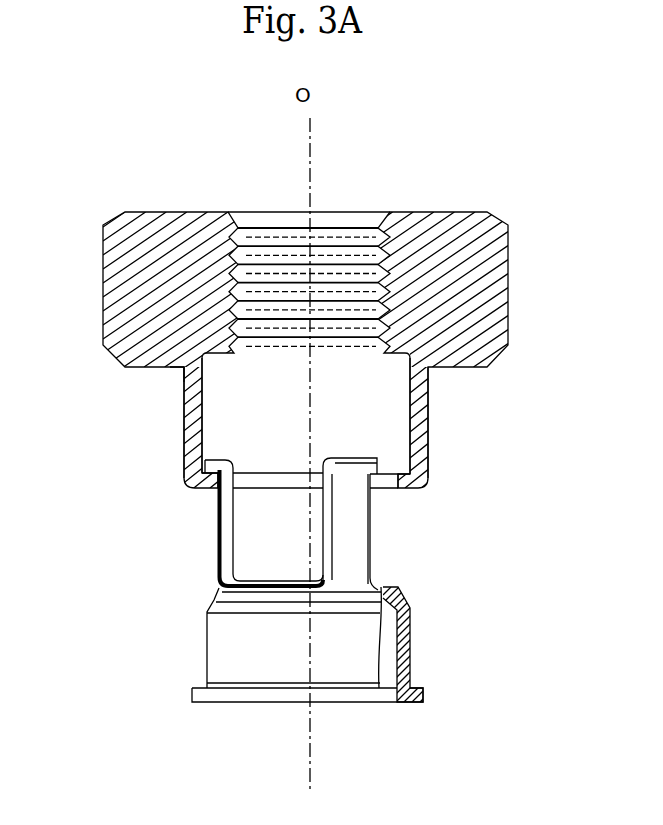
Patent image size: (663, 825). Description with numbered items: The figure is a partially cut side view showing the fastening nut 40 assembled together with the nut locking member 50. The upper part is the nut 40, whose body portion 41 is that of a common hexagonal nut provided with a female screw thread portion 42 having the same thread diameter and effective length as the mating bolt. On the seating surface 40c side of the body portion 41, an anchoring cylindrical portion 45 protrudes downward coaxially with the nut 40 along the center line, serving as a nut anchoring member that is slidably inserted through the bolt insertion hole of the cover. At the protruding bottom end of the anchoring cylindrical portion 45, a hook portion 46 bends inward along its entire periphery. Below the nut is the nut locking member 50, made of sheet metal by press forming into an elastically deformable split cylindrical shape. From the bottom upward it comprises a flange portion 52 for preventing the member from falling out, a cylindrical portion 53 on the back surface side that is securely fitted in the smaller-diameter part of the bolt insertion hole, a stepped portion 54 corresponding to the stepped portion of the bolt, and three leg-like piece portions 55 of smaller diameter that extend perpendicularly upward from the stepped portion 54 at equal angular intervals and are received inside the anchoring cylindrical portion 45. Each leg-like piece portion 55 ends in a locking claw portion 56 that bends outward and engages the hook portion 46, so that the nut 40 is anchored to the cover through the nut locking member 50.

The fastening nut 40 is at (305, 305).
The body portion 41 is at (158, 199).
The seating surface 40c is at (168, 369).
The female screw thread portion 42 is at (234, 250).
The anchoring cylindrical portion 45 is at (195, 440).
The hook portion 46 is at (210, 485).
The nut locking member 50 is at (305, 585).
The flange portion 52 is at (413, 702).
The cylindrical portion on the back surface side 53 is at (410, 650).
The stepped portion 54 is at (212, 598).
The leg-like piece portions 55 is at (218, 548).
The locking claw portion 56 is at (232, 466).